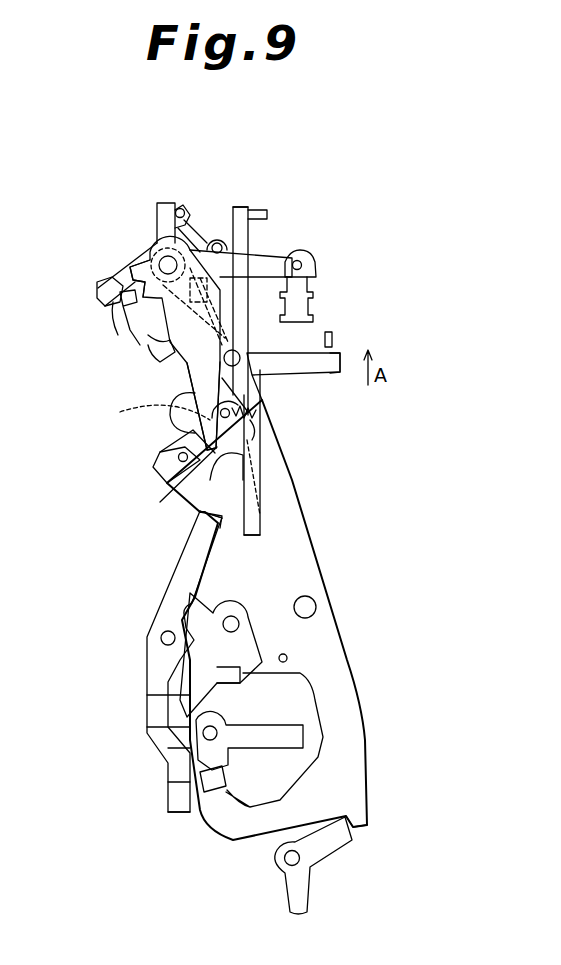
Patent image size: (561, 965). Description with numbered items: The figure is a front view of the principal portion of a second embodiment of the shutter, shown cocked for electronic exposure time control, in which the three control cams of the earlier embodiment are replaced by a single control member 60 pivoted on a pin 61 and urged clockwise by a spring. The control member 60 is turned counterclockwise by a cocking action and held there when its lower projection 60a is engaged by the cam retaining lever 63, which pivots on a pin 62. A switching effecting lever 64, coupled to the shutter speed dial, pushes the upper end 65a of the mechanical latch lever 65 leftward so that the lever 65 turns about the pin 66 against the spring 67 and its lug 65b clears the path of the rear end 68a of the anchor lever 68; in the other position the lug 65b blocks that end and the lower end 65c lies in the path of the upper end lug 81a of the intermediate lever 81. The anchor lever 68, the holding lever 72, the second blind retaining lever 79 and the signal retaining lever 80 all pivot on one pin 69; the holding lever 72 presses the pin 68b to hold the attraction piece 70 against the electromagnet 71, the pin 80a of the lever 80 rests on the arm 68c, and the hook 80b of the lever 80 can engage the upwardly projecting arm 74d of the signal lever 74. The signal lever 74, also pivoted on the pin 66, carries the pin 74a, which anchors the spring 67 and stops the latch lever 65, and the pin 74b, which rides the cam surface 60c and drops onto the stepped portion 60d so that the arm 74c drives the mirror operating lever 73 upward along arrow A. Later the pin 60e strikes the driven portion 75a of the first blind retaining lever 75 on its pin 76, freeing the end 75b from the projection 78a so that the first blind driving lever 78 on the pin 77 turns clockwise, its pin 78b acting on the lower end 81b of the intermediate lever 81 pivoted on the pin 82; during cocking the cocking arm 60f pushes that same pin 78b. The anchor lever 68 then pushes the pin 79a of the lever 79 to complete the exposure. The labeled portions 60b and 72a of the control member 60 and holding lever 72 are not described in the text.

The control member 60 is at (338, 662).
The projection 60a is at (360, 835).
The stop projection 60b is at (205, 512).
The cam surface 60c is at (170, 445).
The stepped portion 60d is at (160, 463).
The pin 60e is at (283, 663).
The cocking arm 60f is at (168, 782).
The pin 61 is at (316, 607).
The pin 62 is at (284, 858).
The cam retaining lever 63 is at (322, 852).
The switching effecting lever 64 is at (268, 213).
The mechanical latch lever 65 is at (244, 332).
The upper end 65a is at (240, 207).
The lug 65b is at (150, 347).
The lower end 65c is at (250, 537).
The pin 66 is at (241, 358).
The spring 67 is at (252, 428).
The anchor lever 68 is at (262, 276).
The rear end 68a is at (136, 262).
The pin 68b is at (180, 406).
The arm 68c is at (156, 204).
The pin 69 is at (160, 258).
The attraction piece 70 is at (310, 268).
The electromagnet 71 is at (310, 305).
The holding lever 72 is at (192, 398).
The pawl arm 72a is at (205, 450).
The mirror operating lever 73 is at (332, 338).
The signal lever 74 is at (222, 382).
The pin 74a is at (237, 404).
The pin 74b is at (153, 413).
The arm 74c is at (332, 373).
The upwardly projecting arm 74d is at (118, 312).
The first blind retaining lever 75 is at (212, 645).
The driven portion 75a is at (235, 676).
The end 75b is at (147, 695).
The pin 76 is at (238, 618).
The pin 77 is at (168, 748).
The first blind driving lever 78 is at (262, 740).
The projection 78a is at (147, 727).
The pin 78b is at (228, 776).
The second blind retaining lever 79 is at (200, 243).
The pin 79a is at (228, 245).
The signal retaining lever 80 is at (120, 270).
The pin 80a is at (178, 207).
The hook 80b is at (97, 290).
The intermediate lever 81 is at (176, 580).
The upper end lug 81a is at (200, 520).
The lower end 81b is at (178, 813).
The pin 82 is at (161, 638).